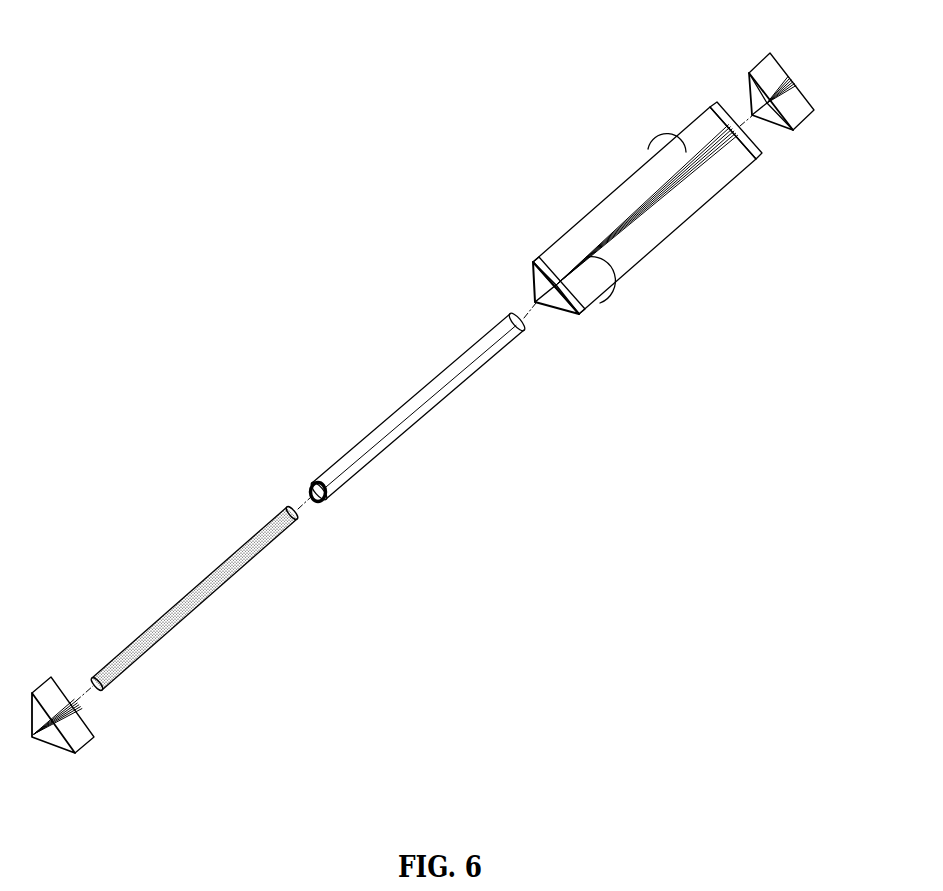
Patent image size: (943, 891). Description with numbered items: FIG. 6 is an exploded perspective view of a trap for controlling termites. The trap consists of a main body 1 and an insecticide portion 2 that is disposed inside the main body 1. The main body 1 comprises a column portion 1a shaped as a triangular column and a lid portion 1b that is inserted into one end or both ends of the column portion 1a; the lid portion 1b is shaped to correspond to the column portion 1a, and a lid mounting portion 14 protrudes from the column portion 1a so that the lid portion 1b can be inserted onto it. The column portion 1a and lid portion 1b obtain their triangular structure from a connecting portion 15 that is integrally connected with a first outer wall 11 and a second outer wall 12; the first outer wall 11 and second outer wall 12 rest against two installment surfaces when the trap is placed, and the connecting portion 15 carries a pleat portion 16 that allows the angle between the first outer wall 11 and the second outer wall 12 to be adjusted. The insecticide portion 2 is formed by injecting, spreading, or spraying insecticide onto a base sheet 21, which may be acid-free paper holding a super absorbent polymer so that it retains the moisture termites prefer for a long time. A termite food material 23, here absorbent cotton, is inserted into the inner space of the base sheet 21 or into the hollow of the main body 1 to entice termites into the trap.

The main body 1 is at (439, 431).
The column portion 1a is at (750, 183).
The lid portion 1b is at (810, 130).
The first outer wall 11 is at (582, 255).
The second outer wall 12 is at (688, 153).
The lid mounting portion 14 is at (717, 100).
The connecting portion 15 is at (677, 207).
The pleat portion 16 is at (610, 233).
The insecticide portion 2 is at (309, 501).
The base sheet 21 is at (350, 478).
The termite food material 23 is at (210, 598).